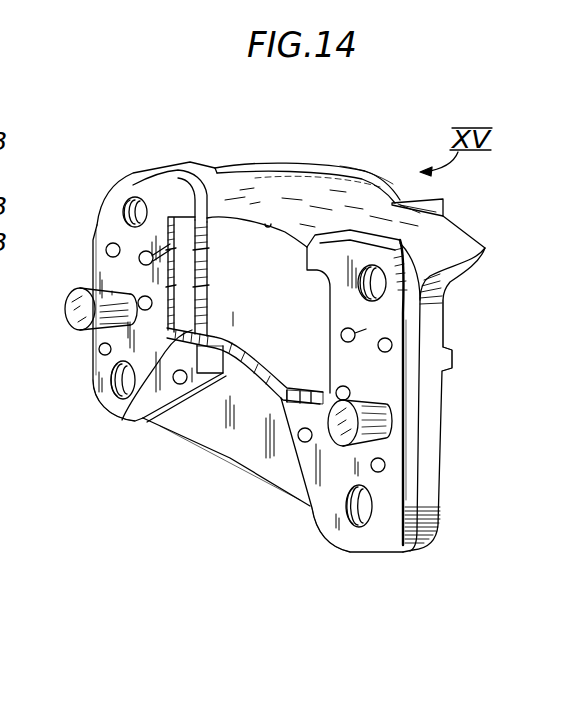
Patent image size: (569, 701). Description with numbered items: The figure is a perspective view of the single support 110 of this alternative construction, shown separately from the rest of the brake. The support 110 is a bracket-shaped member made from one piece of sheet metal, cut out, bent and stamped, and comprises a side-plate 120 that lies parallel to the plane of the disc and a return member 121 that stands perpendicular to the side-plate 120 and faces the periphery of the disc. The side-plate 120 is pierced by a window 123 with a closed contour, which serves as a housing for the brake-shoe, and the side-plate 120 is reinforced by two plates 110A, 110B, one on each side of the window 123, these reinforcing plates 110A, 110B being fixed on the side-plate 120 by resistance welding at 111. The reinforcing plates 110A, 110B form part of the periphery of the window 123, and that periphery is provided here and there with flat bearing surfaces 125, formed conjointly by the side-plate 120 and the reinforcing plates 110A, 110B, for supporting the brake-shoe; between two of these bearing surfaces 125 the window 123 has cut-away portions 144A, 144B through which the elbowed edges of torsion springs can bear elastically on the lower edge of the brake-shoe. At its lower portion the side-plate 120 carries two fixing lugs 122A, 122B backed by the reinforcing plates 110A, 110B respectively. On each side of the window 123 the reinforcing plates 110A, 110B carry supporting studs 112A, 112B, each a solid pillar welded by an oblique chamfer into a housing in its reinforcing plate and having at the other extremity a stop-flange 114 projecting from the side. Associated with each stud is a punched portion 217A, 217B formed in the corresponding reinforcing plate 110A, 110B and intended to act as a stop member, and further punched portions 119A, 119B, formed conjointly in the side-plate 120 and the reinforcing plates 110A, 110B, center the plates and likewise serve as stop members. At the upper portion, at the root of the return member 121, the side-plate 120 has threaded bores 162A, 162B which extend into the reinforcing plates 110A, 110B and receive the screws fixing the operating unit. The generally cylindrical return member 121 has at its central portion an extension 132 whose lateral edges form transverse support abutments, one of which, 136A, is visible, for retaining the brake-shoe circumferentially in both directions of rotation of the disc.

The support 110 is at (426, 552).
The reinforcing plate 110A is at (413, 495).
The reinforcing plate 110B is at (109, 212).
The resistance welding 111 is at (107, 245).
The supporting stud 112A is at (382, 423).
The supporting stud 112B is at (107, 325).
The stop-flange 114 is at (64, 306).
The punched portion 119A is at (440, 318).
The punched portion 119B is at (172, 252).
The side-plate 120 is at (227, 452).
The return member 121 is at (313, 194).
The fixing lug 122A is at (358, 537).
The fixing lug 122B is at (122, 416).
The window 123 is at (268, 224).
The flat bearing surfaces 125 is at (194, 270).
The extension 132 is at (377, 173).
The transverse support abutment 136A is at (444, 207).
The cut-away portion 144A is at (303, 443).
The cut-away portion 144B is at (112, 406).
The threaded bore 162A is at (357, 292).
The threaded bore 162B is at (134, 198).
The punched portion 217A is at (433, 381).
The punched portion 217B is at (152, 303).